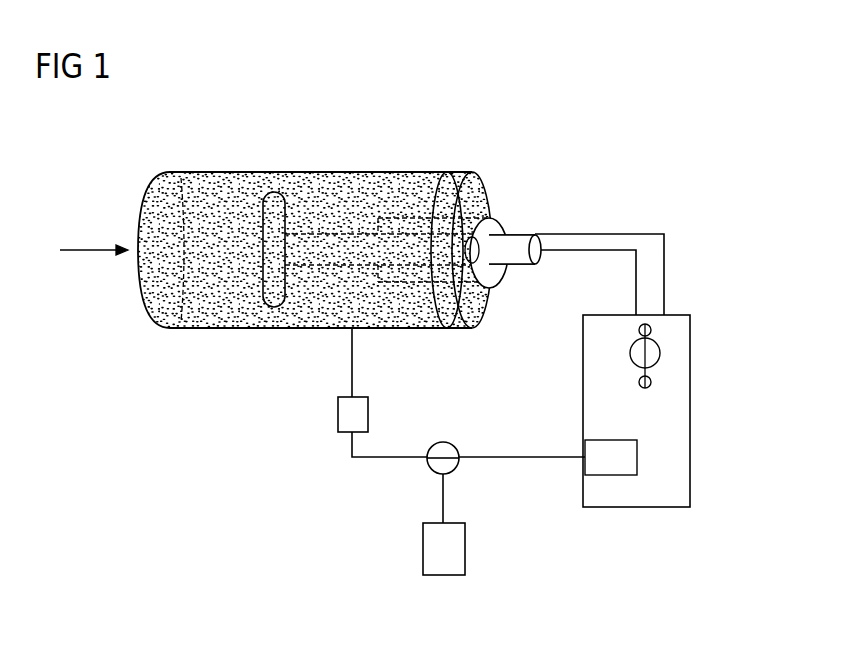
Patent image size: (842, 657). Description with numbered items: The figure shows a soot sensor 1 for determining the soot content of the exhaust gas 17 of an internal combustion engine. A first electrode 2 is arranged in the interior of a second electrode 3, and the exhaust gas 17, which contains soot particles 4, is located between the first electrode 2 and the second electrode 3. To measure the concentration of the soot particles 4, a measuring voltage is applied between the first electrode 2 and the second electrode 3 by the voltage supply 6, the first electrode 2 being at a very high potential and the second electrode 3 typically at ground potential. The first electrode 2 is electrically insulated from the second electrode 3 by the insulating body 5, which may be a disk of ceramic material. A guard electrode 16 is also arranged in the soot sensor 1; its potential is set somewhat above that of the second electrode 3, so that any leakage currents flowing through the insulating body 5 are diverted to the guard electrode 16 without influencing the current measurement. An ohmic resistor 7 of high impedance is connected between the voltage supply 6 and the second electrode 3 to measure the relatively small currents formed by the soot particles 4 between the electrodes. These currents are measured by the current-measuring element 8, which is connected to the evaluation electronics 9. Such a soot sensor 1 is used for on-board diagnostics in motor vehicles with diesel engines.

The soot sensor 1 is at (360, 247).
The first electrode 2 is at (273, 308).
The second electrode 3 is at (213, 328).
The soot particles 4 is at (406, 313).
The insulating body 5 is at (482, 196).
The voltage supply 6 is at (690, 410).
The ohmic resistor 7 is at (338, 413).
The current-measuring element 8 is at (443, 442).
The evaluation electronics 9 is at (423, 550).
The guard electrode 16 is at (481, 273).
The exhaust gas 17 is at (88, 250).